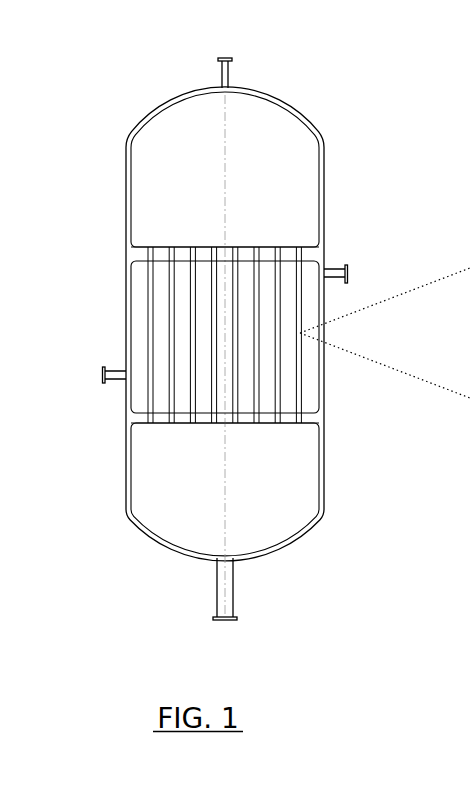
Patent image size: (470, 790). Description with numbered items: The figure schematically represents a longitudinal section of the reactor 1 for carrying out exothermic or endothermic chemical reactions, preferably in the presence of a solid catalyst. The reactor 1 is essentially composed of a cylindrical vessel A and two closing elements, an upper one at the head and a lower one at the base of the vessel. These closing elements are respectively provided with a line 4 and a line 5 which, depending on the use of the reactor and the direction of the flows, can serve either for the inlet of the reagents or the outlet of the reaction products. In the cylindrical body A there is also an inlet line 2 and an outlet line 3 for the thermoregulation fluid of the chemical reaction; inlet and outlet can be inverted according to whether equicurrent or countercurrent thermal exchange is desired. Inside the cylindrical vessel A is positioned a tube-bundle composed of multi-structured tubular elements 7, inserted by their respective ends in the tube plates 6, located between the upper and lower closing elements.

The reactor 1 is at (197, 351).
The inlet line 2 is at (95, 377).
The outlet line 3 is at (357, 275).
The line 4 is at (238, 48).
The line 5 is at (222, 625).
The tube plates 6 is at (328, 246).
The multi-structured tubular element 7 is at (205, 353).
The cylindrical vessel A is at (123, 306).